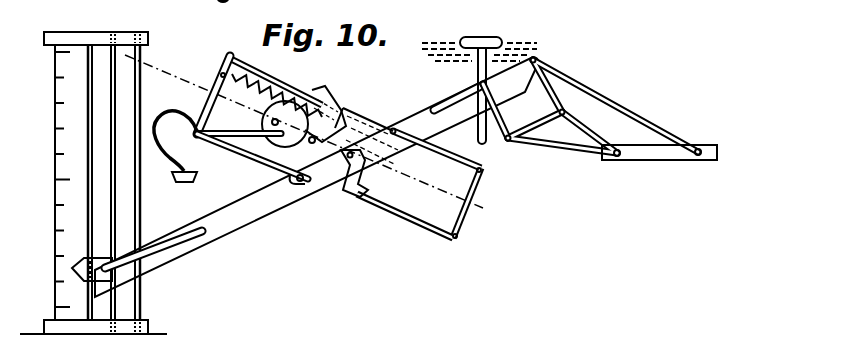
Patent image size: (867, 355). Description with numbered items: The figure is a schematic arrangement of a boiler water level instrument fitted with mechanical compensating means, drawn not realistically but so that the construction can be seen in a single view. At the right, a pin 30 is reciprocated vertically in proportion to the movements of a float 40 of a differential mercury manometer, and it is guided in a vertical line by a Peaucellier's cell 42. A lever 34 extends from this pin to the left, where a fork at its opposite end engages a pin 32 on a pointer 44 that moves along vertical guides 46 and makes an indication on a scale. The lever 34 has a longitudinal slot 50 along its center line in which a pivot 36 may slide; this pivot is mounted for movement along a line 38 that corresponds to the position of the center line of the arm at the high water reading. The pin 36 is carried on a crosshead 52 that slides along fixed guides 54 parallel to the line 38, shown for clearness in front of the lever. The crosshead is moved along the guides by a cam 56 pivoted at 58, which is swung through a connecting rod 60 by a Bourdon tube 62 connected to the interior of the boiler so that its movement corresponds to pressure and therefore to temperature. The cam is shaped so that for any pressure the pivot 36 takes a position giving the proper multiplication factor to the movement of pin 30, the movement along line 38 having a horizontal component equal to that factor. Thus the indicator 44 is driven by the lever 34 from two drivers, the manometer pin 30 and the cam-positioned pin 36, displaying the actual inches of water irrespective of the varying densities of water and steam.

The pin 30 is at (467, 85).
The pin 32 is at (143, 277).
The lever 34 is at (240, 215).
The pivot 36 is at (342, 190).
The line 38 is at (186, 80).
The float 40 is at (497, 40).
The Peaucellier's cell 42 is at (603, 98).
The pointer 44 is at (70, 269).
The vertical guides 46 is at (115, 193).
The longitudinal slot 50 is at (305, 197).
The crosshead 52 is at (355, 180).
The fixed guides 54 is at (270, 80).
The cam 56 is at (324, 88).
The pivot 58 is at (271, 122).
The connecting rod 60 is at (245, 140).
The Bourdon tube 62 is at (163, 115).